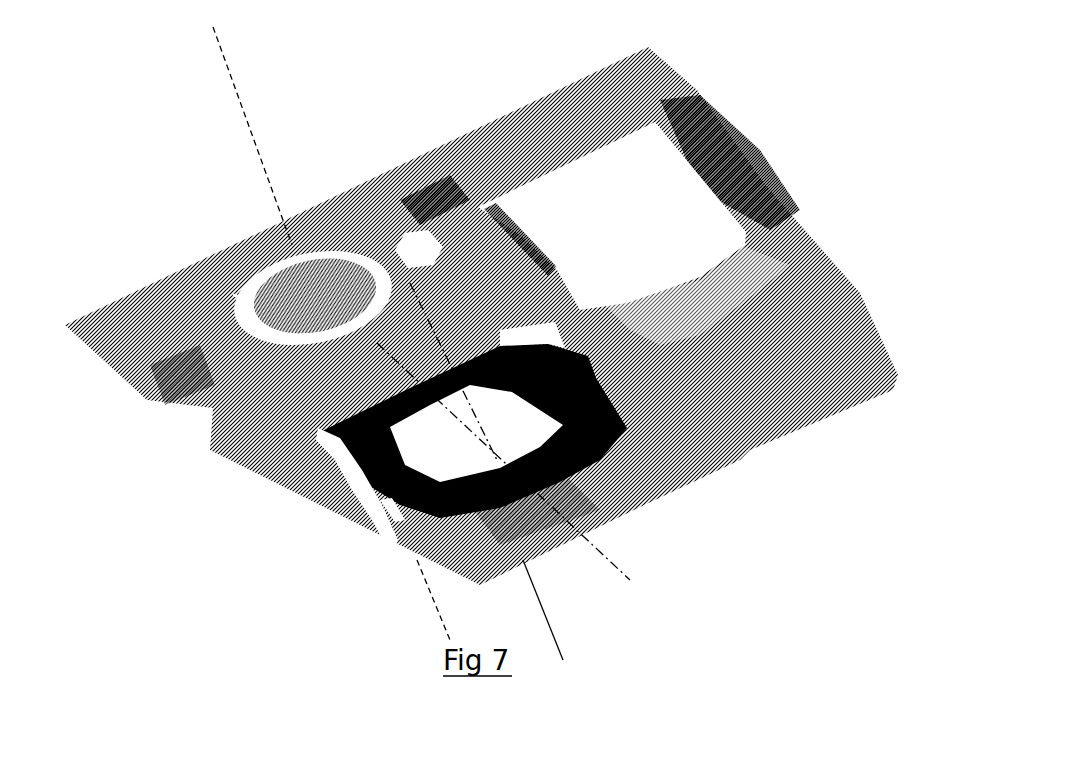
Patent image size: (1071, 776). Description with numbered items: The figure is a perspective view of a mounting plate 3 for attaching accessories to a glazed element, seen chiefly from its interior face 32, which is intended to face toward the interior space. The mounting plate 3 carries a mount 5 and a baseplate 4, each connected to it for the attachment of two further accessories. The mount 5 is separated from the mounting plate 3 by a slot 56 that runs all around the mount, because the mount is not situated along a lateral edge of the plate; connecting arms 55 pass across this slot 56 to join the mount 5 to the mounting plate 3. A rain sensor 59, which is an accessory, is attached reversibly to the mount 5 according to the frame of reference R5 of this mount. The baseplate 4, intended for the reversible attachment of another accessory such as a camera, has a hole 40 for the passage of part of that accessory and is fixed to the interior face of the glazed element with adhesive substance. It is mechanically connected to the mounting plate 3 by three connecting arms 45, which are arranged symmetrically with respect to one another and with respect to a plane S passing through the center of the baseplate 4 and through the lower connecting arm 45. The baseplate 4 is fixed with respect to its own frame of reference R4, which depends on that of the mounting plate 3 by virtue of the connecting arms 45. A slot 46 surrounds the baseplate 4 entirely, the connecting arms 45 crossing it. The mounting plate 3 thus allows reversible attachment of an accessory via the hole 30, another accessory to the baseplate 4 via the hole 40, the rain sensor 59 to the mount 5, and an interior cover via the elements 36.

The mounting plate 3 is at (125, 160).
The baseplate 4 is at (565, 488).
The mount 5 is at (262, 258).
The hole 30 is at (622, 178).
The interior face 32 is at (471, 281).
The elements 36 is at (408, 197).
The hole 40 is at (393, 517).
The connecting arm 45 is at (517, 347).
The slot 46 is at (370, 507).
The connecting arm 55 is at (347, 245).
The slot 56 is at (287, 260).
The rain sensor 59 is at (322, 260).
The frame of reference R4 is at (540, 593).
The frame of reference R5 is at (243, 97).
The plane S is at (635, 583).